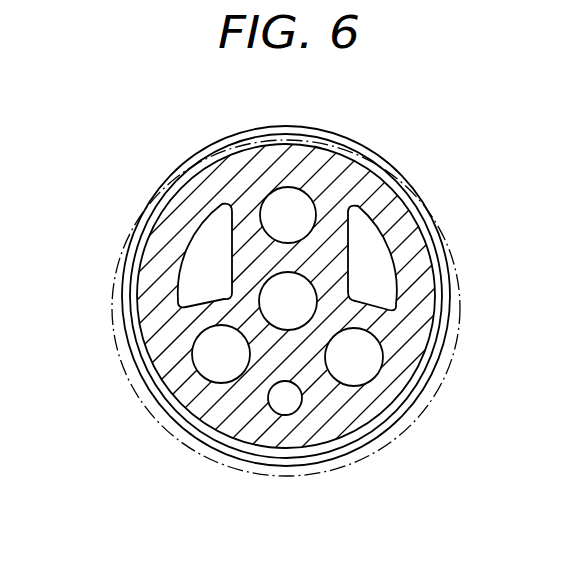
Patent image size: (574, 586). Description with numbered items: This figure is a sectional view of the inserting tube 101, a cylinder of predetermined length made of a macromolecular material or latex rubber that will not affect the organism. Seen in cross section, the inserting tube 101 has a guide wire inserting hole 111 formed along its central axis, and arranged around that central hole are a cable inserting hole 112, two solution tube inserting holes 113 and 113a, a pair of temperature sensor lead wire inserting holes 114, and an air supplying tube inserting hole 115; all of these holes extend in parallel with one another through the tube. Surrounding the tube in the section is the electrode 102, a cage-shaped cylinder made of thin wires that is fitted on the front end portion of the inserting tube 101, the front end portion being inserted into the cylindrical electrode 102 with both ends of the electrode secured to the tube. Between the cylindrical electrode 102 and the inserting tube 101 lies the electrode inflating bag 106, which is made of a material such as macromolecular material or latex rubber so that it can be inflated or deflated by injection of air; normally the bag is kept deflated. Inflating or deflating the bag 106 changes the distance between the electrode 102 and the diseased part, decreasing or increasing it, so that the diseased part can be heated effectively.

The inserting tube 101 is at (294, 296).
The electrode 102 is at (225, 467).
The electrode inflating bag 106 is at (377, 438).
The guide wire inserting hole 111 is at (272, 297).
The cable inserting hole 112 is at (282, 195).
The solution tube inserting hole 113 is at (382, 263).
The solution tube inserting hole 113a is at (193, 246).
The temperature sensor lead wire inserting hole 114 is at (207, 368).
The air supplying tube inserting hole 115 is at (288, 403).